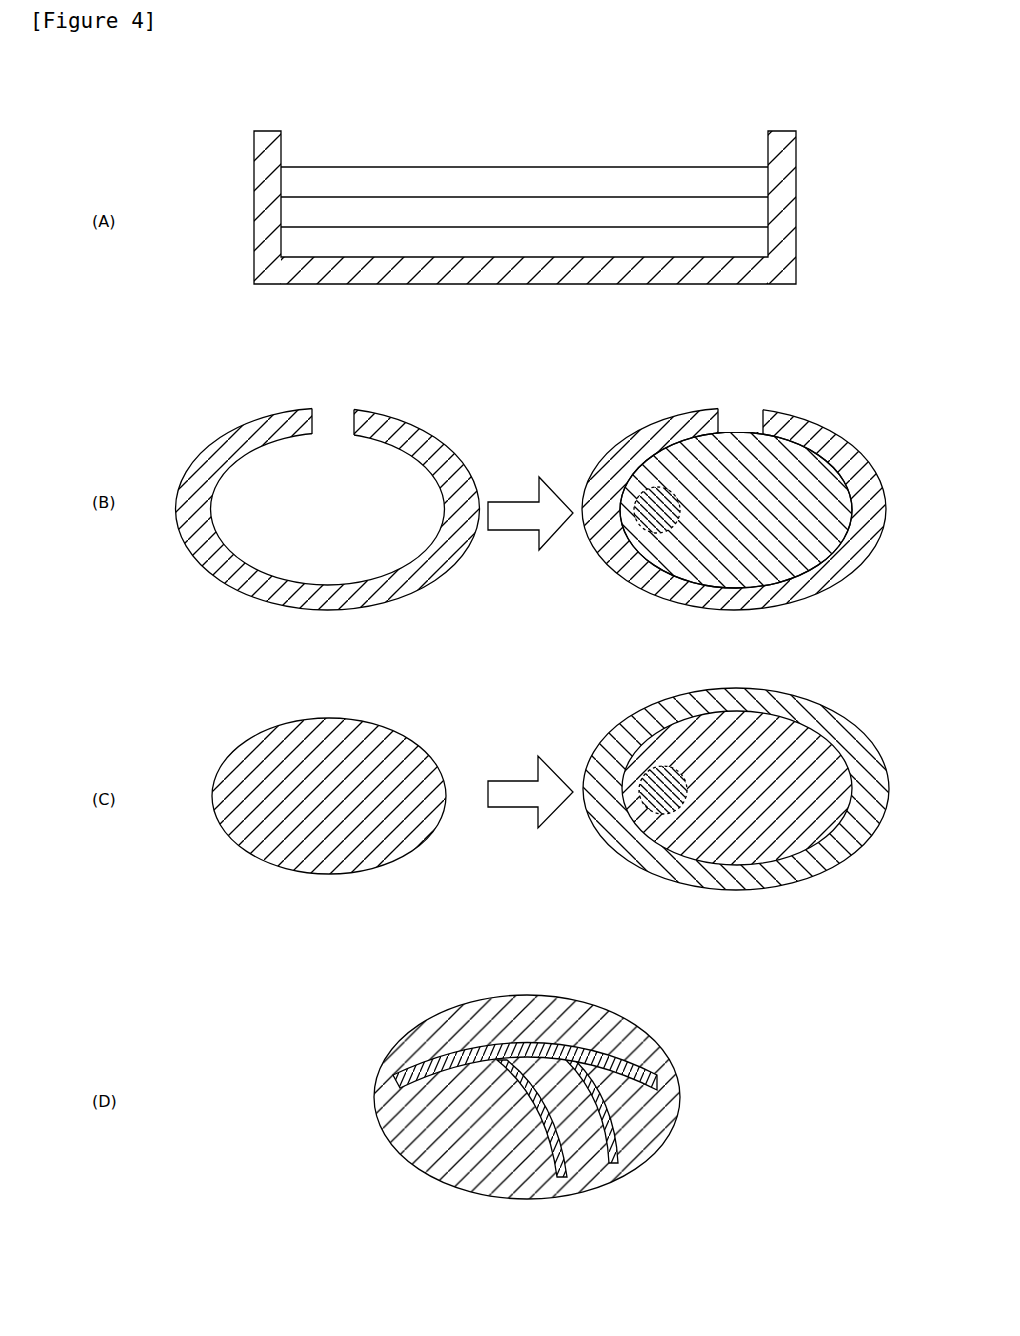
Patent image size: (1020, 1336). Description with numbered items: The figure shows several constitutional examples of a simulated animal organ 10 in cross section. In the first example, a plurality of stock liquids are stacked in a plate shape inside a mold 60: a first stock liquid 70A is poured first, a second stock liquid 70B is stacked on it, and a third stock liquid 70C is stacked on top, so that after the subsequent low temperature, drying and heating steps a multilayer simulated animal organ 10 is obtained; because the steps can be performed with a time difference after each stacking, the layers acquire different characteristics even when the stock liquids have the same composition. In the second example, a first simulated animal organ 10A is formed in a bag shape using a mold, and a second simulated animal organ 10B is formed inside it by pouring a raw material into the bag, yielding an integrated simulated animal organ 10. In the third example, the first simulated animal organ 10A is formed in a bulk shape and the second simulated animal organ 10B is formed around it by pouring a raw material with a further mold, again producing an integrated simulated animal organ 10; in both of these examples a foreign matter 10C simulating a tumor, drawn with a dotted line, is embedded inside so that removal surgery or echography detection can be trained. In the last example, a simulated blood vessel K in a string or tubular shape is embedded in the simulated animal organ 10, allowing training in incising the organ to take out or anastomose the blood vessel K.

The simulated animal organ 10 is at (533, 664).
The first simulated animal organ 10A is at (531, 636).
The second simulated animal organ 10B is at (736, 662).
The foreign matter 10C is at (660, 650).
The mold 60 is at (813, 176).
The first stock liquid 70A is at (524, 240).
The second stock liquid 70B is at (524, 210).
The third stock liquid 70C is at (524, 180).
The simulated blood vessel K is at (476, 1052).